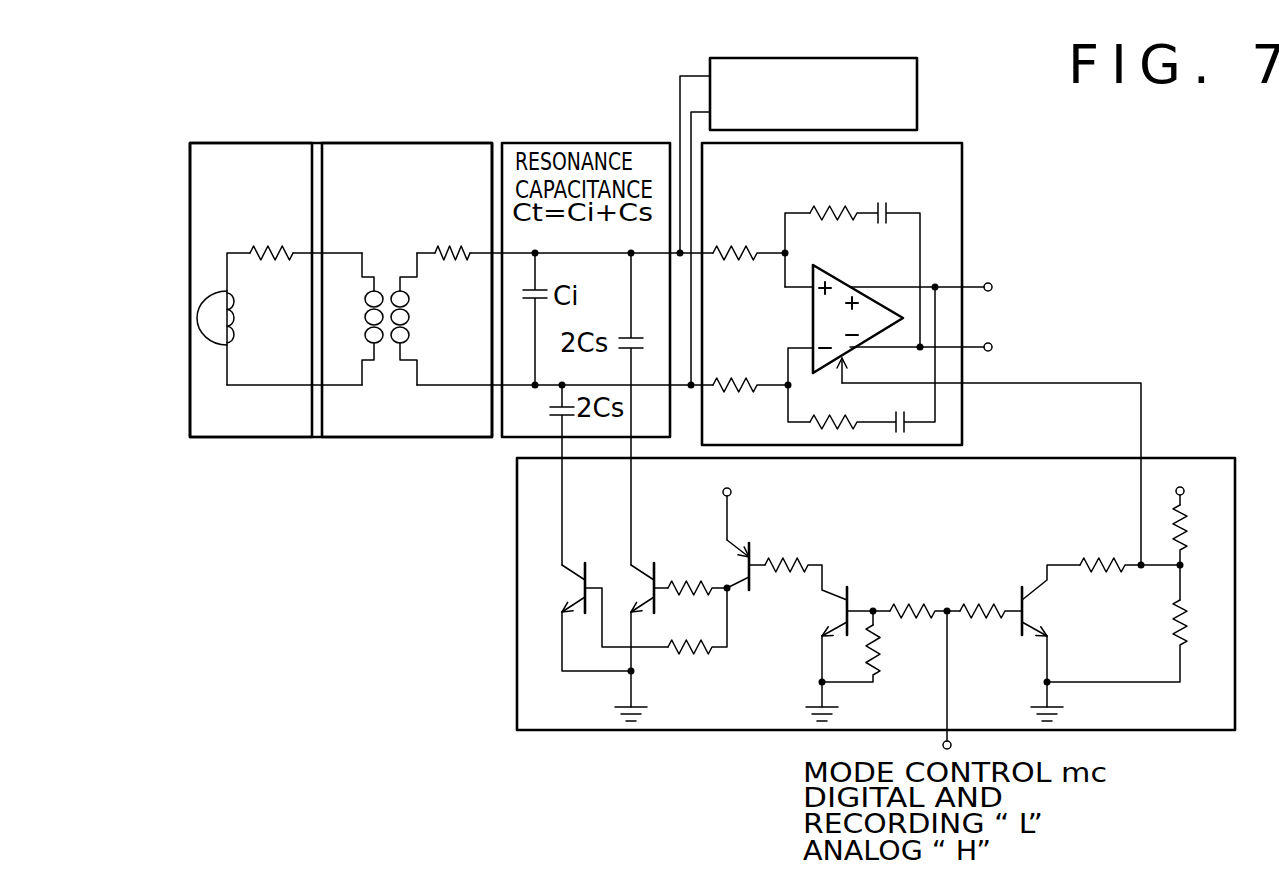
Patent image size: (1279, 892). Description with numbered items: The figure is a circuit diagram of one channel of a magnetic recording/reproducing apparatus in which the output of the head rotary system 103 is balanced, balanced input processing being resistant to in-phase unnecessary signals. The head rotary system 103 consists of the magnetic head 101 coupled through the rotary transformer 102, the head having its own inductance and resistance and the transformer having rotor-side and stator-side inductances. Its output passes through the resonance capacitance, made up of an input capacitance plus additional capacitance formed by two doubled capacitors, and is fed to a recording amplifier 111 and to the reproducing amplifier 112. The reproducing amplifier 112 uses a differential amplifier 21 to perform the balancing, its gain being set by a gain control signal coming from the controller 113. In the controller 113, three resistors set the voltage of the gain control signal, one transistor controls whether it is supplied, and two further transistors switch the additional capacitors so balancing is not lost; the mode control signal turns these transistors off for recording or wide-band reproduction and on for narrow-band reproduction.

The magnetic head 101 is at (258, 143).
The rotary transformer 102 is at (418, 143).
The head rotary system 103 is at (350, 126).
The recording amplifier 111 is at (917, 90).
The reproducing amplifier 112 is at (921, 354).
The controller 113 is at (517, 573).
The operational amplifier 21 is at (845, 281).